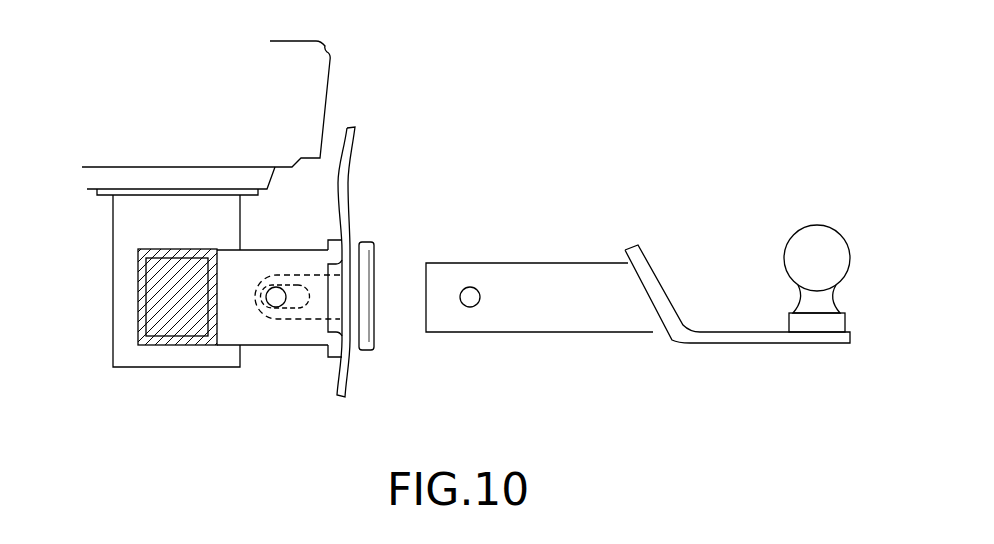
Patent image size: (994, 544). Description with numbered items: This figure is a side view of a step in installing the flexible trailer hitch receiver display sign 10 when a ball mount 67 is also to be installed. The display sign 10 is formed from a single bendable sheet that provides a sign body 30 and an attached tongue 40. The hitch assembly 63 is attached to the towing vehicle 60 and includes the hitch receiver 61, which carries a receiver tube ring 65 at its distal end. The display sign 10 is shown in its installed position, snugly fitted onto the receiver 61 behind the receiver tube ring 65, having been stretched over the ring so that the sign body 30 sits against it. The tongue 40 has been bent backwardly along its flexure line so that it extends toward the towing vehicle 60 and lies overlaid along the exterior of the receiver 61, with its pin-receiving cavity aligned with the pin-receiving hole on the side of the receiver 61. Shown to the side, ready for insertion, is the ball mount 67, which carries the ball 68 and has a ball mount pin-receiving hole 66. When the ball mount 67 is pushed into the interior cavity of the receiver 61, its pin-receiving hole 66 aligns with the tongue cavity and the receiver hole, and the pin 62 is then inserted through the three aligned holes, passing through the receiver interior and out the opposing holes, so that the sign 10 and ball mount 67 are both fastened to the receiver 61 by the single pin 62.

The flexible trailer hitch receiver display sign 10 is at (362, 114).
The sign body 30 is at (352, 377).
The tongue 40 is at (298, 319).
The towing vehicle 60 is at (262, 86).
The hitch receiver 61 is at (260, 330).
The pin 62 is at (274, 287).
The hitch assembly 63 is at (138, 340).
The receiver tube ring 65 is at (368, 343).
The ball mount pin-receiving hole 66 is at (473, 284).
The ball mount 67 is at (571, 252).
The ball 68 is at (816, 260).